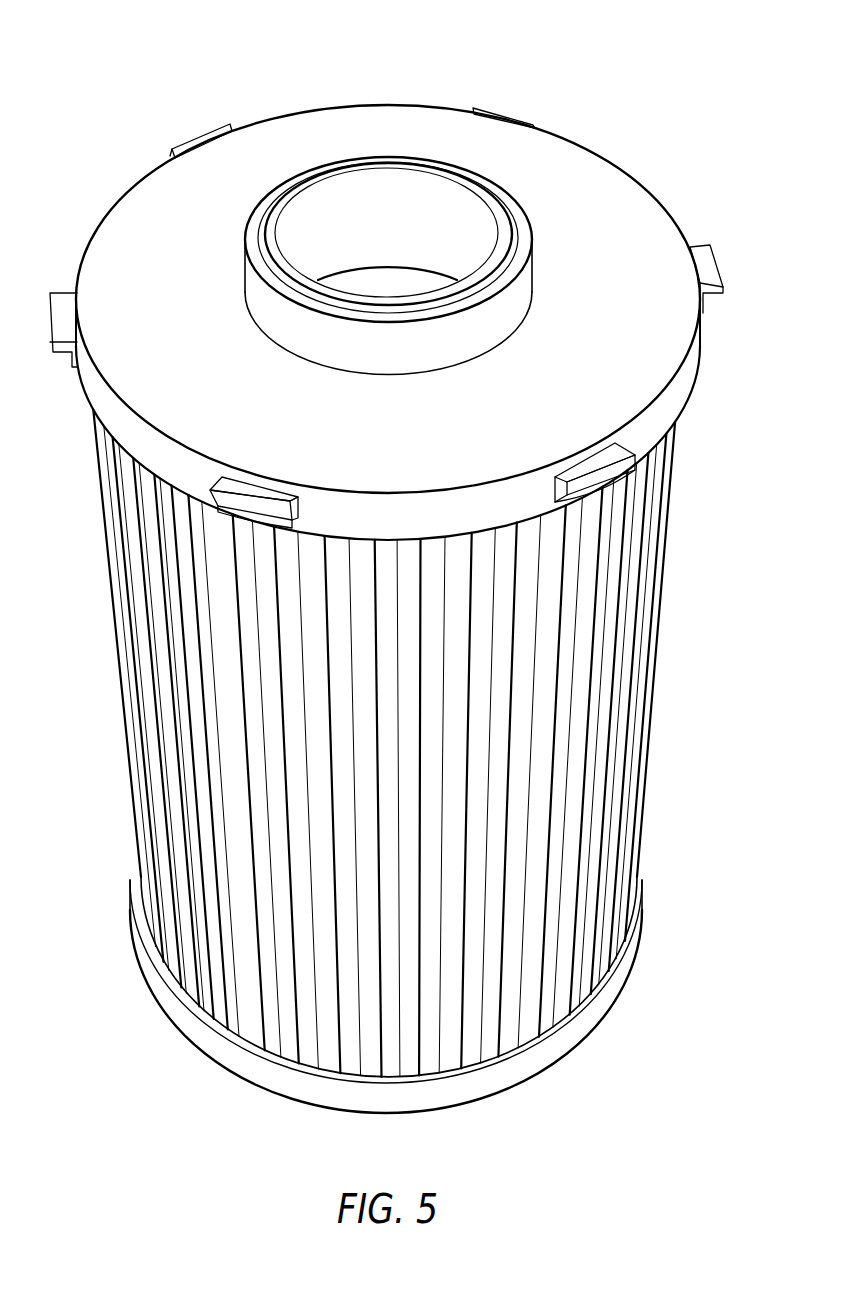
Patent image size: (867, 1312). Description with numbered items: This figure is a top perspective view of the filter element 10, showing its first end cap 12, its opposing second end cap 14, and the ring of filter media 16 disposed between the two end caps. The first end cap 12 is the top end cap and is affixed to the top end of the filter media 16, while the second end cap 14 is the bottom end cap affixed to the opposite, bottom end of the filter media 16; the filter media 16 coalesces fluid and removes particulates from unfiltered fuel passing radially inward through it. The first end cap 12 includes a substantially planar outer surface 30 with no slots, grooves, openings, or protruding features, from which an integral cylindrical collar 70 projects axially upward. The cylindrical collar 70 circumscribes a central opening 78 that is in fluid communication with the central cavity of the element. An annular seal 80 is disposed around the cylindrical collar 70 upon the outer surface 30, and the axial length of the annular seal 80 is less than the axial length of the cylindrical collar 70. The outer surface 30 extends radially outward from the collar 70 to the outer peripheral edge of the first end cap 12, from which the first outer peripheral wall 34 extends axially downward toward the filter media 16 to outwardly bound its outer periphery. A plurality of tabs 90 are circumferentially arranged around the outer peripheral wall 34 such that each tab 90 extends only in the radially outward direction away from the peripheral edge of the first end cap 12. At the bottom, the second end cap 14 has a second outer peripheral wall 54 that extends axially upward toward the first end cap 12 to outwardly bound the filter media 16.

The filter element 10 is at (54, 58).
The first end cap 12 is at (392, 92).
The second end cap 14 is at (547, 1102).
The filter media 16 is at (638, 633).
The first outer surface 30 is at (551, 167).
The first outer peripheral wall 34 is at (683, 378).
The second outer peripheral wall 54 is at (597, 1012).
The cylindrical collar 70 is at (207, 133).
The central opening 78 is at (357, 200).
The annular seal 80 is at (533, 273).
The tabs 90 is at (706, 263).